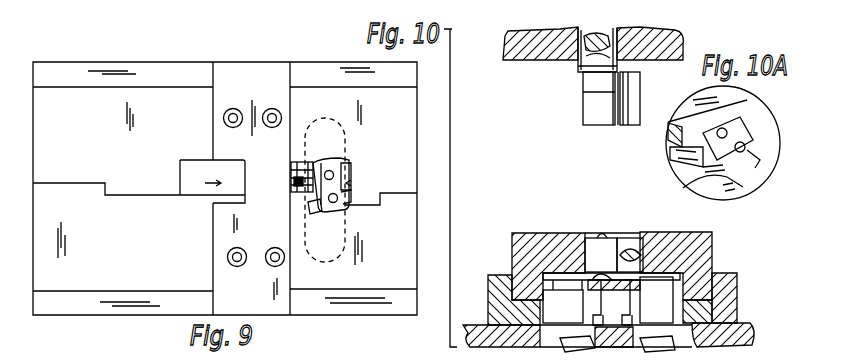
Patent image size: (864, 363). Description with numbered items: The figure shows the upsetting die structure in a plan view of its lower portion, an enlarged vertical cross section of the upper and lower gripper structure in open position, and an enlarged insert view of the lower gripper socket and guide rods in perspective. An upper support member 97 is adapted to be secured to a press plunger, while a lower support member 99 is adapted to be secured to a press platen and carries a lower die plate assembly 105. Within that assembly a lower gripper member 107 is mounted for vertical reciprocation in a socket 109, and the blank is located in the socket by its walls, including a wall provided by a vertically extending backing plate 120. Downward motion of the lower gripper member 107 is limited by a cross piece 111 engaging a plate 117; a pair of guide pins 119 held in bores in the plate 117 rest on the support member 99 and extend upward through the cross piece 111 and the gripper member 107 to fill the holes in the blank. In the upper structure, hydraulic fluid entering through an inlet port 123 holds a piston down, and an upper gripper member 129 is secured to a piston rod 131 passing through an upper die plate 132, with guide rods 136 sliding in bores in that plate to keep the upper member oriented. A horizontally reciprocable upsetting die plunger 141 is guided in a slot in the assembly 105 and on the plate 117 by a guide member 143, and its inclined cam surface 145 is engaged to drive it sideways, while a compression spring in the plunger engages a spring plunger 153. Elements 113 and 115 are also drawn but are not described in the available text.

In FIG. 9, the lower die plate assembly 105 is at (82, 160).
In FIG. 10, the lower die plate assembly 105 is at (721, 251).
In FIG. 10A, the lower die plate assembly 105 is at (752, 180).
In FIG. 9, the upsetting die plunger 141 is at (240, 173).
In FIG. 9, the inclined cam surface 145 is at (185, 188).
In FIG. 9, the guide member 143 is at (254, 100).
In FIG. 9, the lower gripper member 107 is at (333, 162).
In FIG. 10, the lower gripper member 107 is at (590, 240).
In FIG. 10A, the lower gripper member 107 is at (727, 152).
In FIG. 9, the backing plate 120 is at (343, 172).
In FIG. 10A, the backing plate 120 is at (765, 158).
In FIG. 9, the socket 109 is at (343, 196).
In FIG. 10, the socket 109 is at (635, 240).
In FIG. 10A, the socket 109 is at (721, 141).
In FIG. 9, the spring plunger 153 is at (295, 192).
In FIG. 9, the cross piece 111 is at (330, 202).
In FIG. 10, the cross piece 111 is at (683, 282).
In FIG. 9, the upper support member 97 is at (344, 355).
In FIG. 9, the inlet port 123 is at (442, 355).
In FIG. 10, the piston rod 131 is at (613, 32).
In FIG. 10, the guide rods 136 is at (622, 47).
In FIG. 10, the upper die plate 132 is at (672, 53).
In FIG. 10, the upper gripper member 129 is at (587, 108).
In FIG. 10, the guide pins 119 is at (600, 232).
In FIG. 10A, the guide pins 119 is at (750, 137).
In FIG. 10, the plate 117 is at (737, 287).
In FIG. 10, the wedge 115 is at (560, 345).
In FIG. 10, the lower support member 99 is at (757, 333).
In FIG. 10, the spacer 113 is at (568, 308).